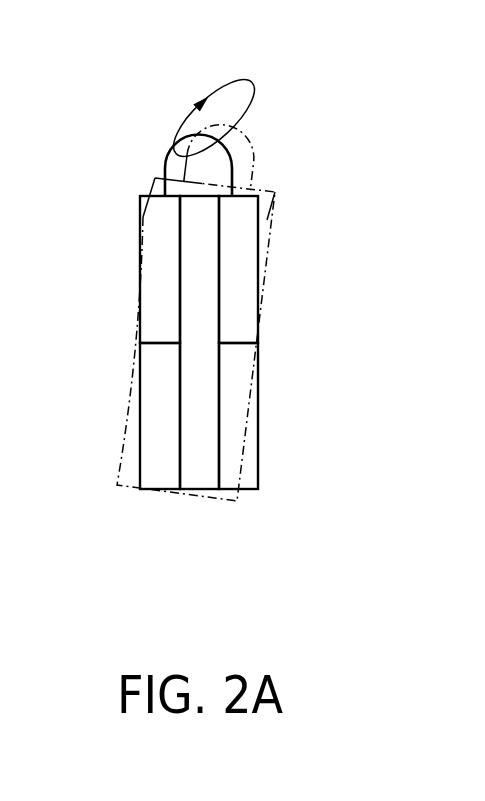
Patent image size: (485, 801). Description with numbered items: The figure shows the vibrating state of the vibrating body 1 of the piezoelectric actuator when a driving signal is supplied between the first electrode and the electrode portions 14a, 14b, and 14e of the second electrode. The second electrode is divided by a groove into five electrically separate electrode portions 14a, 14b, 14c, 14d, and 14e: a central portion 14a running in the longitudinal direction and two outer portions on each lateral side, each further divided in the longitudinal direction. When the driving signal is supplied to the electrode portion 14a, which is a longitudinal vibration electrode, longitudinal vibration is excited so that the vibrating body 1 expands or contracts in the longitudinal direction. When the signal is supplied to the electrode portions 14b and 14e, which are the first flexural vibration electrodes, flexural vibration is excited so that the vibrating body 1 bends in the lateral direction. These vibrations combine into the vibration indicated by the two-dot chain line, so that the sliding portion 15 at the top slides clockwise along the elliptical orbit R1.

The vibrating body 1 is at (308, 93).
The electrode portion 14a is at (198, 482).
The electrode portion 14b is at (153, 275).
The electrode portion 14c is at (153, 407).
The electrode portion 14d is at (245, 275).
The electrode portion 14e is at (245, 407).
The sliding portion 15 is at (232, 162).
The elliptical orbit R1 is at (248, 78).